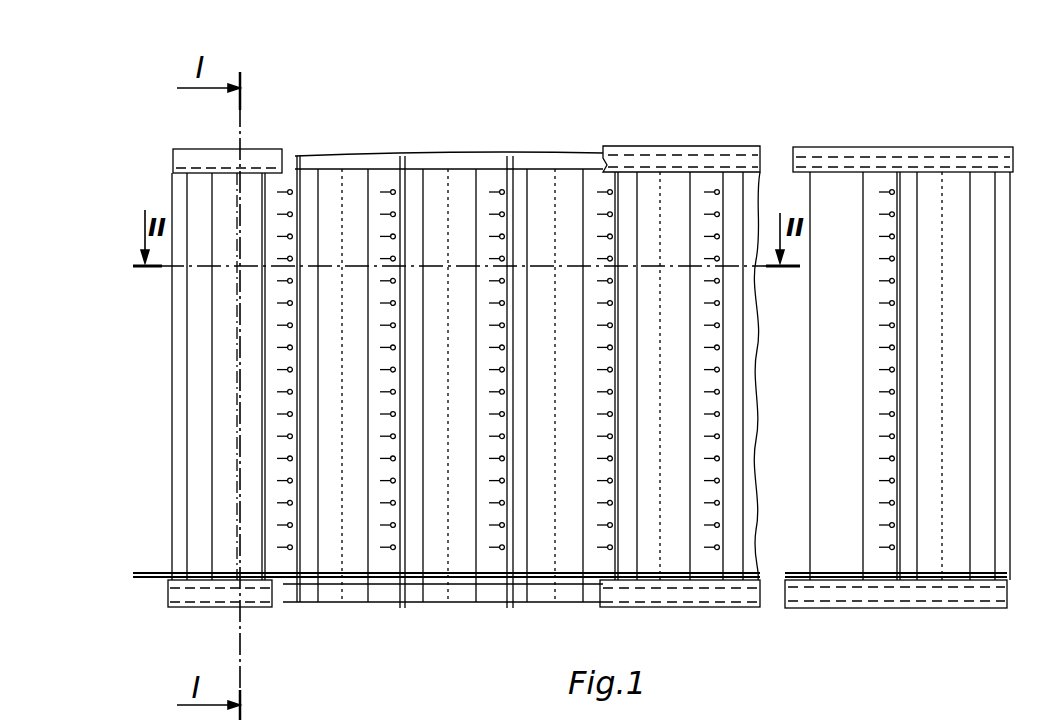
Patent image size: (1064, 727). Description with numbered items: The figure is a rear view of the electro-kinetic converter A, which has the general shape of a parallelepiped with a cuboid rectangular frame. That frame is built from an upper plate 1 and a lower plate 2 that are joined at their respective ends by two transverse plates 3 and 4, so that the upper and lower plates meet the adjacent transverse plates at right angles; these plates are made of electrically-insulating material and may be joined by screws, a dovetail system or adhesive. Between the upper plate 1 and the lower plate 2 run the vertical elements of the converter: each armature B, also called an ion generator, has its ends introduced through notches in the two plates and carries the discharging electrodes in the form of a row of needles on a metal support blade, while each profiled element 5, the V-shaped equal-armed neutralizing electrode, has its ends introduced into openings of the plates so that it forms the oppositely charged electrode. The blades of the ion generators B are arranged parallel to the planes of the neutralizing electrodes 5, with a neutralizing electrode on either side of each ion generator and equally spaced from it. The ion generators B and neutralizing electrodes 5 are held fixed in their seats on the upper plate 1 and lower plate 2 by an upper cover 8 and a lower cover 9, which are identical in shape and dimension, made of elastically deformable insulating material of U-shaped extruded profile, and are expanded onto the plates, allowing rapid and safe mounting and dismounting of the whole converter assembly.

The upper plate 1 is at (458, 165).
The lower plate 2 is at (460, 592).
The transverse plate 3 is at (178, 432).
The transverse plate 4 is at (1000, 405).
The profiled element (neutralizing electrode) 5 is at (225, 343).
The upper cover 8 is at (837, 160).
The lower cover 9 is at (848, 593).
The electro-kinetic converter A is at (702, 130).
The armature (ion generator) B is at (300, 202).